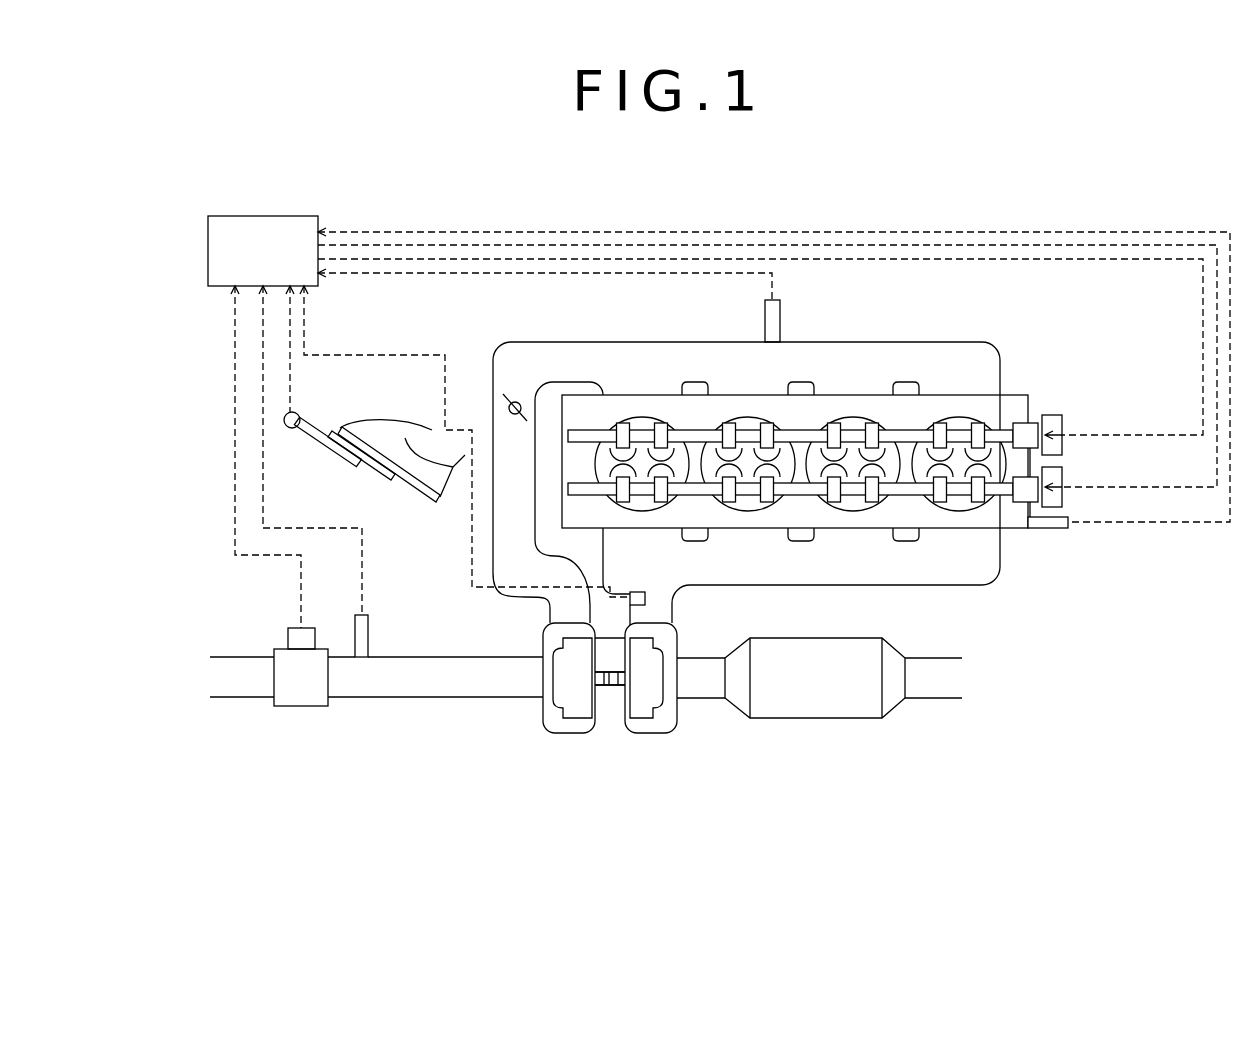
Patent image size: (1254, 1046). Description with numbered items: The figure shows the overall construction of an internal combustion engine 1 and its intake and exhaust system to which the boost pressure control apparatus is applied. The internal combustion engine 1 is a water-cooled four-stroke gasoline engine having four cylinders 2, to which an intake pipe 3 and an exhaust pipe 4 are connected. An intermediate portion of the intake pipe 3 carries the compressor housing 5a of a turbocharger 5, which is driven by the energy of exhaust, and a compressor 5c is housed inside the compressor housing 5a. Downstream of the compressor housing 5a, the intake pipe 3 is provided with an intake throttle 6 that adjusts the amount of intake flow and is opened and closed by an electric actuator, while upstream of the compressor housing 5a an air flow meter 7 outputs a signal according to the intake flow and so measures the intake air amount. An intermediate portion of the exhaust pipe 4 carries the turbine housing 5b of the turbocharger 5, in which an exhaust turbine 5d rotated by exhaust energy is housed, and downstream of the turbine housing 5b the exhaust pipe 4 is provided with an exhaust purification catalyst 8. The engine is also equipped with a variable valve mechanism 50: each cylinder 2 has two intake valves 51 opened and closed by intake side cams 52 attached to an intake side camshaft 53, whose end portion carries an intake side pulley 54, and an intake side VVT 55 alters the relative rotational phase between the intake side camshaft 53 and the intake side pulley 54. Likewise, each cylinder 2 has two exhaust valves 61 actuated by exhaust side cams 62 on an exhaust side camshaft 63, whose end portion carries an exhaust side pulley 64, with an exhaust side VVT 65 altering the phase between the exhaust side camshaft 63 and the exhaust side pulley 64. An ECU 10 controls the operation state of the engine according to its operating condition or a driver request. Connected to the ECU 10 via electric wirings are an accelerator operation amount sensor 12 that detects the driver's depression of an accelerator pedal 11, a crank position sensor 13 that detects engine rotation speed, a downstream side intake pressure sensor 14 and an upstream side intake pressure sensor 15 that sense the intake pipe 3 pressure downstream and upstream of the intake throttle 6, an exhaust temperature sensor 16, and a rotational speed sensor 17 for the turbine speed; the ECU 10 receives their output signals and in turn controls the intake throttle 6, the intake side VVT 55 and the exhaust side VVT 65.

The internal combustion engine 1 is at (1077, 658).
The cylinders 2 is at (913, 458).
The intake pipe 3 is at (612, 341).
The exhaust pipe 4 is at (752, 585).
The turbocharger 5 is at (511, 629).
The compressor housing 5a is at (560, 718).
The turbine housing 5b is at (668, 722).
The compressor 5c is at (563, 698).
The exhaust turbine 5d is at (647, 713).
The intake throttle 6 is at (505, 409).
The air flow meter 7 is at (315, 640).
The exhaust purification catalyst 8 is at (815, 718).
The ECU 10 is at (318, 286).
The accelerator pedal 11 is at (377, 473).
The accelerator operation amount sensor 12 is at (297, 413).
The crank position sensor 13 is at (1063, 530).
The downstream side intake pressure sensor 14 is at (780, 318).
The upstream side intake pressure sensor 15 is at (369, 634).
The exhaust temperature sensor 16 is at (640, 592).
The rotational speed sensor 17 is at (612, 685).
The variable valve mechanism 50 is at (1114, 385).
The intake valves 51 is at (960, 423).
The intake side cams 52 is at (980, 423).
The intake side camshaft 53 is at (915, 430).
The intake side pulley 54 is at (1053, 415).
The intake side VVT 55 is at (1030, 423).
The exhaust valves 61 is at (960, 502).
The exhaust side cams 62 is at (982, 502).
The exhaust side camshaft 63 is at (928, 502).
The exhaust side pulley 64 is at (1062, 466).
The exhaust side VVT 65 is at (1020, 502).